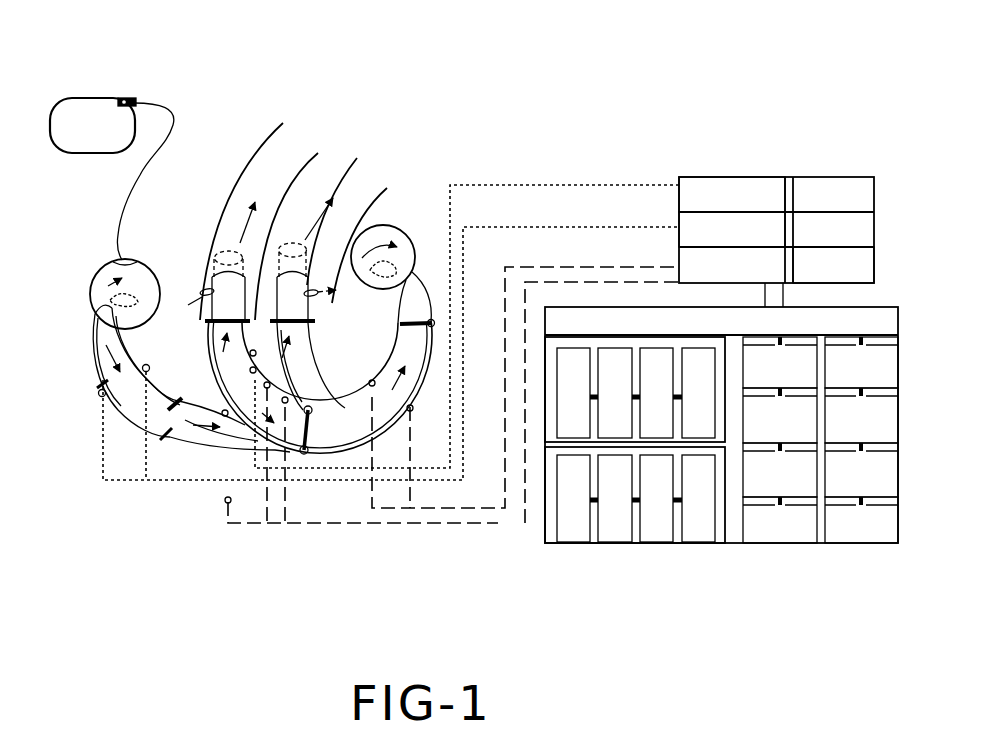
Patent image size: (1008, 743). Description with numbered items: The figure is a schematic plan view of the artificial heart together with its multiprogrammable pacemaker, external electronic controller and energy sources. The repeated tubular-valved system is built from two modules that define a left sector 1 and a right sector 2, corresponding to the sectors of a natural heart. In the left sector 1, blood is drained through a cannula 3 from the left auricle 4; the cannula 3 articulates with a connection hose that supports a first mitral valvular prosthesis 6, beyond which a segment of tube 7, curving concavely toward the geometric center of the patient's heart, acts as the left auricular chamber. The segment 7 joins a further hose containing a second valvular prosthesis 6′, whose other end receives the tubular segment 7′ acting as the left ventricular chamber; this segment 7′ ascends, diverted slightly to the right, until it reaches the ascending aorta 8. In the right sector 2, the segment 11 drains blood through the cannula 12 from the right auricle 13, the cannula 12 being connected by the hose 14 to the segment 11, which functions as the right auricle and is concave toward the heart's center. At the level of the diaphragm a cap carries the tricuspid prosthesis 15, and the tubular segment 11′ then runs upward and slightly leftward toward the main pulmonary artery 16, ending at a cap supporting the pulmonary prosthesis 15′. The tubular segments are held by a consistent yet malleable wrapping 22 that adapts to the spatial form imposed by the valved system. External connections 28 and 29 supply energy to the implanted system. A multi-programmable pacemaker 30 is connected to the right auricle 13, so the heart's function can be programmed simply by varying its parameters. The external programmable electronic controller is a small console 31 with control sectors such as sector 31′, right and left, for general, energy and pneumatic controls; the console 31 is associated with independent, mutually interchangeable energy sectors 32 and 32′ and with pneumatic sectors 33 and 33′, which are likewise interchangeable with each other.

The left sector 1 is at (340, 414).
The right sector 2 is at (102, 393).
The cannula 3 is at (398, 253).
The left auricle 4 is at (375, 268).
The first mitral valvular prosthesis 6 is at (403, 322).
The valvular prosthesis 6′ is at (297, 420).
The segment of tube 7 is at (358, 447).
The tubular segment 7′ is at (248, 430).
The ascending aorta 8 is at (265, 180).
The segment 11 is at (100, 395).
The tubular segment 11′ is at (203, 443).
The cannula 12 is at (95, 305).
The right auricle 13 is at (106, 258).
The hose 14 is at (97, 330).
The tricuspid prosthesis 15 is at (170, 425).
The pulmonary prosthesis 15′ is at (300, 322).
The main pulmonary artery 16 is at (353, 187).
The malleable wrapping 22 is at (130, 350).
The external connection 28 is at (523, 185).
The external connection 29 is at (505, 508).
The multi-programmable pacemaker 30 is at (100, 115).
The console 31 is at (772, 177).
The console sector 31′ is at (733, 195).
The energy sector 32 is at (787, 525).
The energy sector 32′ is at (865, 522).
The pneumatic sector 33 is at (617, 403).
The pneumatic sector 33′ is at (660, 520).